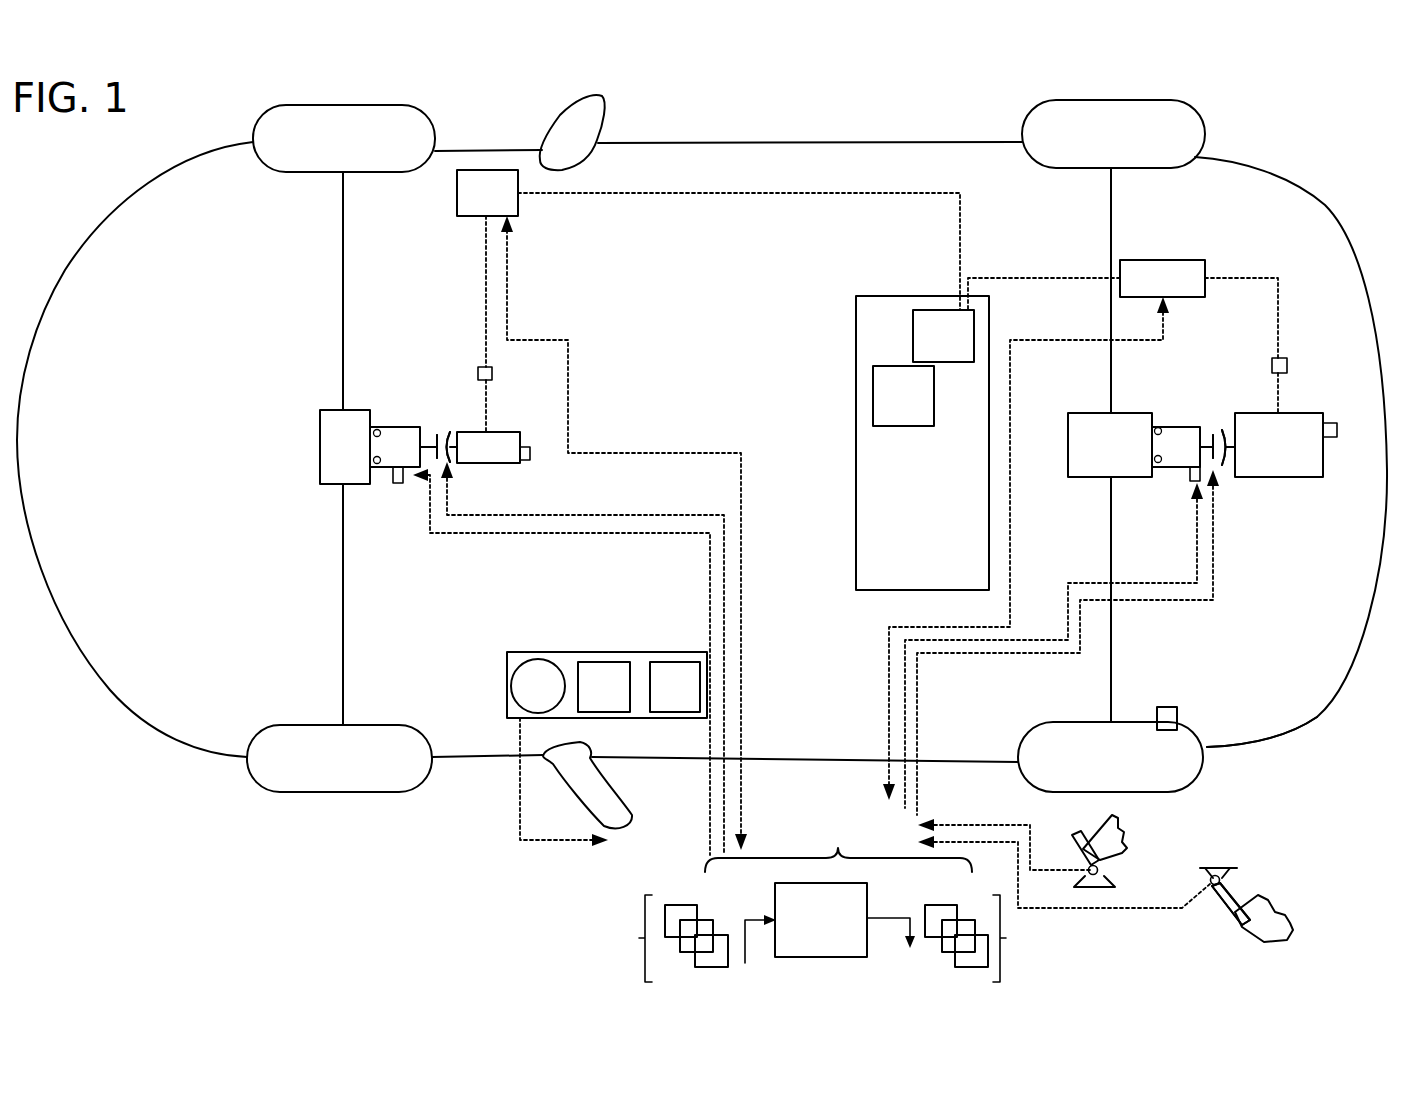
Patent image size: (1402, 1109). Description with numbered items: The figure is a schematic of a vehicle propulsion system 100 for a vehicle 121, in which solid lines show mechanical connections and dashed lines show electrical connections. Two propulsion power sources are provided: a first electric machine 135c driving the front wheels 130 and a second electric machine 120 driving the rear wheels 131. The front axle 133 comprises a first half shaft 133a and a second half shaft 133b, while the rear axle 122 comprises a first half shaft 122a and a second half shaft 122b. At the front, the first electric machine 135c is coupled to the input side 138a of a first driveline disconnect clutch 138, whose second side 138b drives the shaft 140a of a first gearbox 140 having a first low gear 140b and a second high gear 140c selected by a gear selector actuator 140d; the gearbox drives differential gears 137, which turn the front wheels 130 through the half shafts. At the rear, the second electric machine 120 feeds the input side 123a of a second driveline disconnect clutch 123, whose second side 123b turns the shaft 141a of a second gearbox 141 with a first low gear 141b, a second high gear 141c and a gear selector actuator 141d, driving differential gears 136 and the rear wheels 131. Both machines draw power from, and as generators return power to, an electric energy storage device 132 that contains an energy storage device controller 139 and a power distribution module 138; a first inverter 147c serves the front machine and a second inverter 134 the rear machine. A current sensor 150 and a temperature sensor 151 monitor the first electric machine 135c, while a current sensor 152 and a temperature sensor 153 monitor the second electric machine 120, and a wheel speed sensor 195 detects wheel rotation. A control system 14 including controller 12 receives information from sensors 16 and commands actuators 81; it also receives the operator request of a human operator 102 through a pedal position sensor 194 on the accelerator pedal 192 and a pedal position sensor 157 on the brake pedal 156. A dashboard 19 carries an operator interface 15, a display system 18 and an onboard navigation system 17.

The vehicle propulsion system 100 is at (848, 113).
The front wheels 130 is at (357, 105).
The rear wheels 131 is at (1150, 100).
The front axle 133 is at (330, 525).
The first half shaft 133a is at (343, 240).
The second half shaft 133b is at (343, 670).
The rear axle 122 is at (1143, 243).
The first half shaft 122a is at (1111, 218).
The second half shaft 122b is at (1111, 648).
The first inverter 147c is at (708, 510).
The current sensor 150 is at (492, 378).
The differential gears 137 is at (345, 447).
The first gearbox 140 is at (403, 447).
The shaft 140a is at (432, 446).
The first low gear 140b is at (377, 467).
The second high gear 140c is at (376, 428).
The gear selector actuator 140d is at (399, 484).
The first driveline disconnect clutch 138 is at (453, 467).
The input side 138a is at (447, 443).
The second side 138b is at (436, 440).
The first electric machine 135c is at (488, 447).
The temperature sensor 151 is at (530, 462).
The electric energy storage device 132 is at (922, 443).
The electric energy storage device controller 139 is at (903, 396).
The second inverter system controller 134 is at (1080, 530).
The current sensor 152 is at (1288, 373).
The differential gears 136 is at (1110, 445).
The second gearbox 141 is at (1182, 447).
The shaft 141a is at (1208, 437).
The first low gear 141b is at (1158, 463).
The second high gear 141c is at (1157, 428).
The gear selector actuator 141d is at (1193, 482).
The second driveline disconnect clutch 123 is at (1222, 468).
The input side 123a is at (1225, 437).
The second side 123b is at (1213, 433).
The second electric machine 120 is at (1279, 445).
The temperature sensor 153 is at (1337, 436).
The wheel speed sensor 195 is at (1170, 705).
The vehicle 121 is at (1327, 753).
The dashboard 19 is at (640, 652).
The operator interface 15 is at (559, 752).
The display system 18 is at (604, 687).
The onboard navigation system 17 is at (675, 687).
The control system 14 is at (957, 856).
The controller 12 is at (830, 923).
The sensors 16 is at (641, 938).
The actuators 81 is at (1018, 938).
The pedal 192 is at (1072, 850).
The pedal position sensor 194 is at (1100, 870).
The human operator 102 is at (1108, 838).
The pedal position sensor 157 is at (1205, 880).
The brake pedal 156 is at (1240, 928).